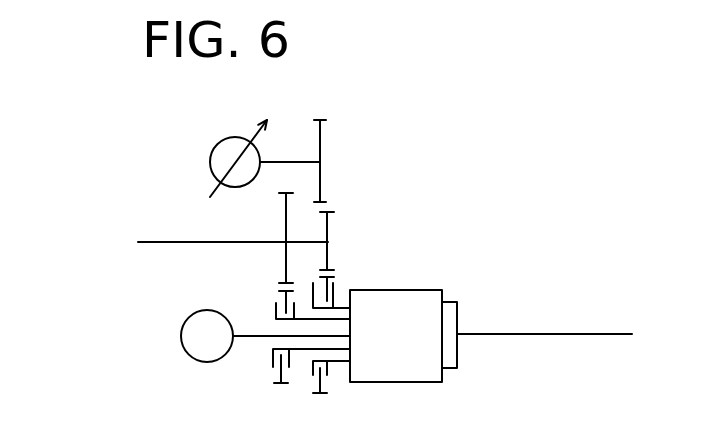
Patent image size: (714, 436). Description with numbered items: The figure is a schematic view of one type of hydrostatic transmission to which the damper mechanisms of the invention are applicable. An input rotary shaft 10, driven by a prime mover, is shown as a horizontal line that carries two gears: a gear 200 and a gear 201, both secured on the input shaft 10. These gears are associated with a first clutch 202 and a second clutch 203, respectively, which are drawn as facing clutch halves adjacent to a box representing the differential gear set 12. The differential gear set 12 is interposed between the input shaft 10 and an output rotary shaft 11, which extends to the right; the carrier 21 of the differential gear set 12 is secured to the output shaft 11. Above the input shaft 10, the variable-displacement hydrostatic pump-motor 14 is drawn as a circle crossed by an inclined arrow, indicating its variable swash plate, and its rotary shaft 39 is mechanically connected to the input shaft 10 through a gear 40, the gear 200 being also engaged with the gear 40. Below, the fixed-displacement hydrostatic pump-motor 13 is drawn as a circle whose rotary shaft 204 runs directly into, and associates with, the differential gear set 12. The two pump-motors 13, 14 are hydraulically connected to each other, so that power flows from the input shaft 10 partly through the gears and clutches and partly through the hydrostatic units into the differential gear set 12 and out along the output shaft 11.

The input rotary shaft 10 is at (155, 242).
The output rotary shaft 11 is at (578, 334).
The differential gear set 12 is at (415, 285).
The hydrostatic pump-motor 13 is at (200, 352).
The hydrostatic pump-motor 14 is at (210, 167).
The carrier 21 is at (458, 312).
The rotary shaft 39 is at (285, 160).
The gear 40 is at (322, 148).
The gear 200 is at (329, 222).
The gear 201 is at (284, 218).
The first clutch 202 is at (267, 353).
The second clutch 203 is at (331, 304).
The rotary shaft 204 is at (257, 331).